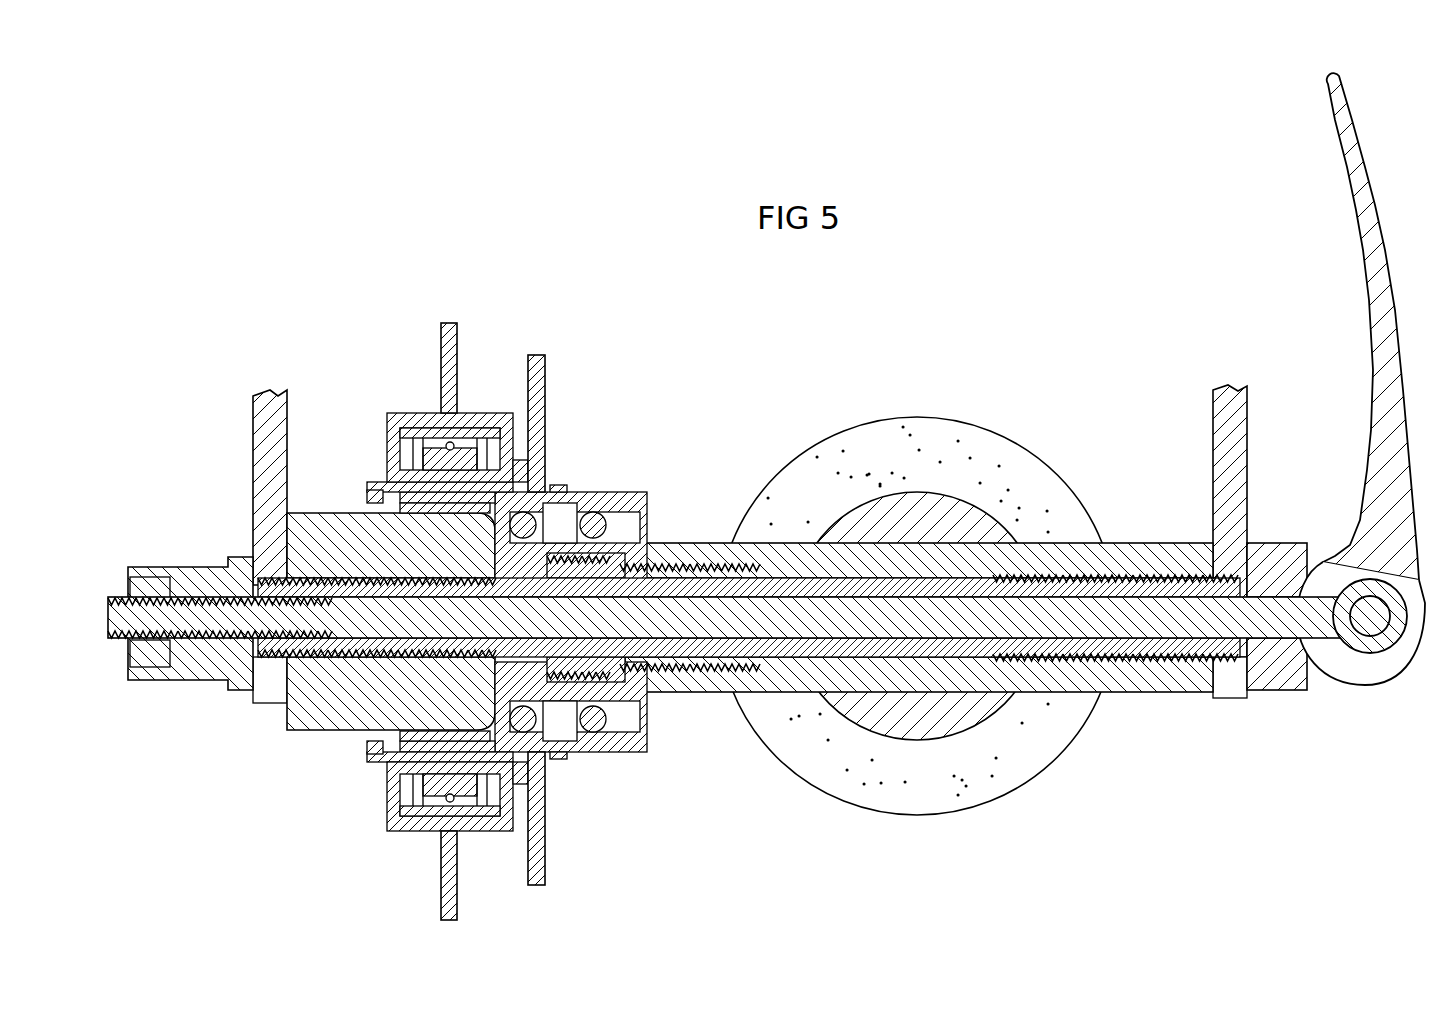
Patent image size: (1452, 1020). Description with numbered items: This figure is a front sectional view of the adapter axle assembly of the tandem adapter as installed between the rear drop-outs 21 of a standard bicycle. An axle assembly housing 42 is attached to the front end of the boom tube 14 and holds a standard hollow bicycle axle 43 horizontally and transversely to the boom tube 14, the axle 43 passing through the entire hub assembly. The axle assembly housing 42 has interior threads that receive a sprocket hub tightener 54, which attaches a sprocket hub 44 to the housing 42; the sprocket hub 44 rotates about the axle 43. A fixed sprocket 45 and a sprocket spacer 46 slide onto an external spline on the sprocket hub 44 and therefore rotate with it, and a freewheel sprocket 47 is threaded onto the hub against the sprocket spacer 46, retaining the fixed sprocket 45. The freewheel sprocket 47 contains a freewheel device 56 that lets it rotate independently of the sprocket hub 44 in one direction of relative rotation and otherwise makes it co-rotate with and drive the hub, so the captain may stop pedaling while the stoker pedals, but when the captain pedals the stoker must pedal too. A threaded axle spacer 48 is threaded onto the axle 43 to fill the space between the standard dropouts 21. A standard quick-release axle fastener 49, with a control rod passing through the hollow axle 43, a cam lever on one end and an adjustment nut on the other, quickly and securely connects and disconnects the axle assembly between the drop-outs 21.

The boom tube 14 is at (948, 427).
The rear drop-outs 21 is at (264, 440).
The axle assembly housing 42 is at (1165, 545).
The standard hollow bicycle axle 43 is at (1150, 647).
The sprocket hub 44 is at (597, 492).
The fixed sprocket 45 is at (540, 392).
The sprocket spacer 46 is at (522, 768).
The freewheel sprocket 47 is at (446, 352).
The threaded axle spacer 48 is at (330, 723).
The quick-release axle fastener 49 is at (1317, 622).
The sprocket hub tightener 54 is at (678, 672).
The freewheel device 56 is at (428, 457).